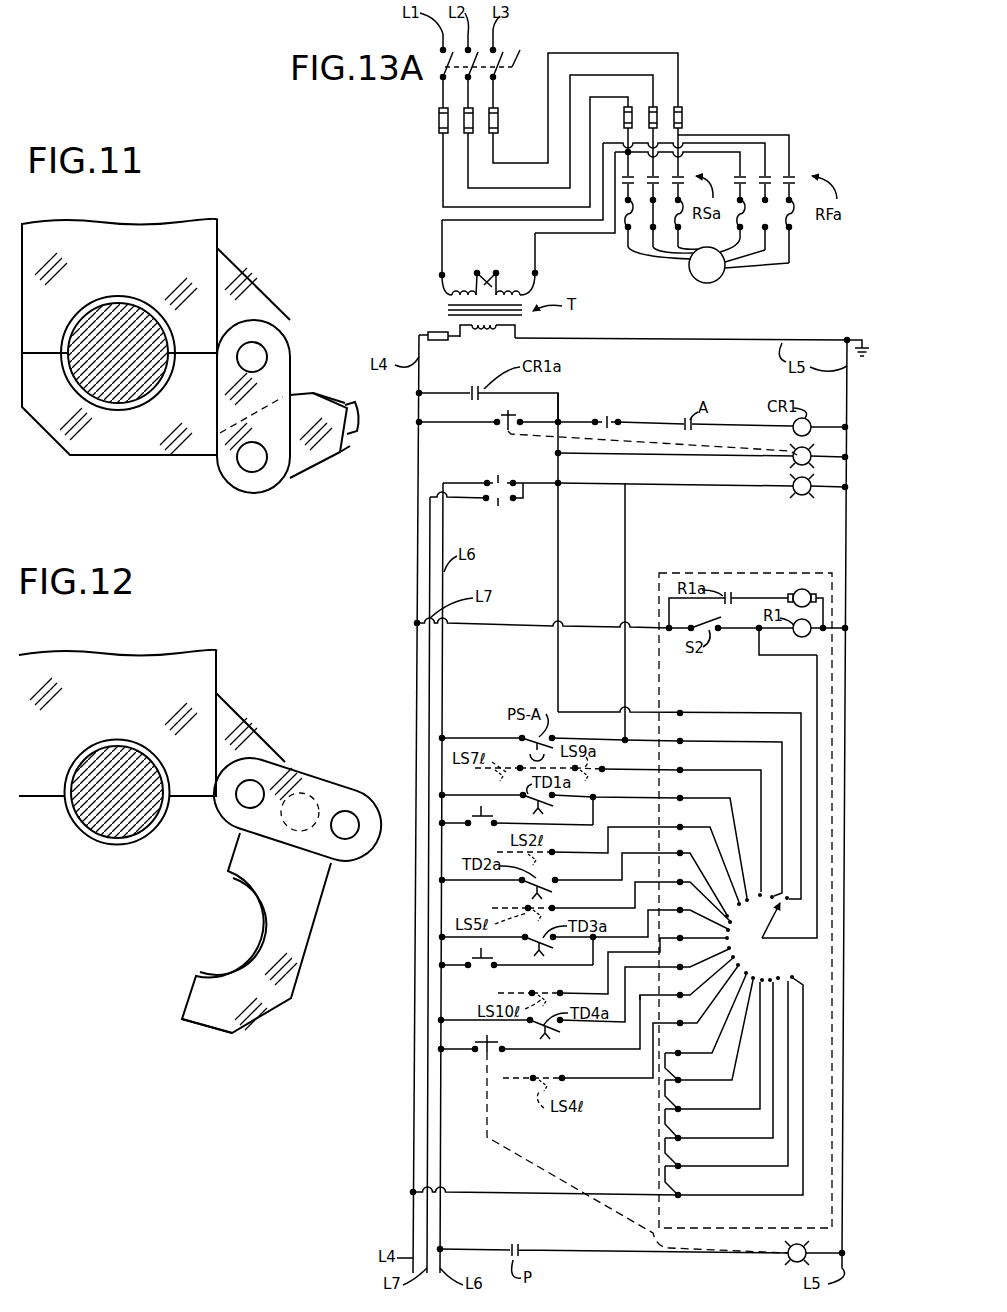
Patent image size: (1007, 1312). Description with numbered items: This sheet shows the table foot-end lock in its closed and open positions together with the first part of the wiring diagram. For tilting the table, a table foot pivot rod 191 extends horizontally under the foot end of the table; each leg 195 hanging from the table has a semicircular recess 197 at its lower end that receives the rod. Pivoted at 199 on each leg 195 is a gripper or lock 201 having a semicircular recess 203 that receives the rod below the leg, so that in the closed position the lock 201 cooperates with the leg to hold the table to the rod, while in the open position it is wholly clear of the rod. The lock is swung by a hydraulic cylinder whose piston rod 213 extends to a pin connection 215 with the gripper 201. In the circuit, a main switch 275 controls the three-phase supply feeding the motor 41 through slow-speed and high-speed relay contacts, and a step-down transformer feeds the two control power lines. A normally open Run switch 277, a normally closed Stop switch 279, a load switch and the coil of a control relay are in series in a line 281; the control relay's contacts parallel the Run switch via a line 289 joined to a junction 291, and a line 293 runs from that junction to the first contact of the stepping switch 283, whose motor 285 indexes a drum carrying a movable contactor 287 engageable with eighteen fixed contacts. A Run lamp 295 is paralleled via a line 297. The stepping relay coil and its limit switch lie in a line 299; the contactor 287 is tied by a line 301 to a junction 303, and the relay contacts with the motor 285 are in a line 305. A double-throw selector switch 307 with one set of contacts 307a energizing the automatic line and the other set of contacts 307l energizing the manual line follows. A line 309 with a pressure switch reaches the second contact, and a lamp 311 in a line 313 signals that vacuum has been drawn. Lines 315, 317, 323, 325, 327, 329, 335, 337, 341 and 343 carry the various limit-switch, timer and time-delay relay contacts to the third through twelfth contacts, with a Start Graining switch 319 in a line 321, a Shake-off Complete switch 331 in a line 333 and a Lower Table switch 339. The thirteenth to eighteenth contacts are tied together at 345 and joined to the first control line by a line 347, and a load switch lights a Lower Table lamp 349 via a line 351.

In FIG. 11, the table foot pivot rod 191 is at (105, 388).
In FIG. 12, the table foot pivot rod 191 is at (74, 833).
In FIG. 11, the leg 195 is at (218, 222).
In FIG. 12, the leg 195 is at (218, 671).
In FIG. 11, the semicircular recess 197 is at (116, 296).
In FIG. 12, the semicircular recess 197 is at (141, 740).
In FIG. 11, the pivot 199 is at (268, 357).
In FIG. 12, the pivot 199 is at (259, 798).
In FIG. 11, the gripper or lock 201 is at (63, 452).
In FIG. 12, the gripper or lock 201 is at (218, 1036).
In FIG. 11, the semicircular recess 203 is at (155, 397).
In FIG. 12, the semicircular recess 203 is at (258, 922).
In FIG. 11, the piston rod 213 is at (352, 436).
In FIG. 11, the pin connection 215 is at (248, 472).
In FIG. 12, the pin connection 215 is at (344, 864).
In FIG. 13A, the motor 41 is at (703, 283).
In FIG. 13A, the main switch 275 is at (520, 50).
In FIG. 13A, the Run switch 277 is at (501, 415).
In FIG. 13A, the Stop switch 279 is at (619, 418).
In FIG. 13A, the line 281 is at (486, 424).
In FIG. 13A, the stepping switch 283 is at (682, 571).
In FIG. 13A, the motor 285 is at (803, 588).
In FIG. 13A, the movable contactor 287 is at (777, 918).
In FIG. 13A, the line 289 is at (453, 392).
In FIG. 13A, the junction 291 is at (560, 418).
In FIG. 13A, the line 293 is at (559, 575).
In FIG. 13A, the Run lamp 295 is at (793, 452).
In FIG. 13A, the line 297 is at (633, 454).
In FIG. 13A, the line 299 is at (488, 627).
In FIG. 13A, the line 301 is at (817, 681).
In FIG. 13A, the junction 303 is at (759, 633).
In FIG. 13A, the line 305 is at (787, 596).
In FIG. 13A, the double-throw selector switch 307 is at (508, 478).
In FIG. 13A, the contacts 307a is at (491, 478).
In FIG. 13A, the contacts 307l is at (517, 500).
In FIG. 13A, the line 309 is at (477, 737).
In FIG. 13A, the lamp 311 is at (804, 497).
In FIG. 13A, the line 313 is at (627, 528).
In FIG. 13A, the line 315 is at (746, 770).
In FIG. 13A, the line 317 is at (730, 797).
In FIG. 13A, the Start Graining switch 319 is at (481, 827).
In FIG. 13A, the line 321 is at (596, 809).
In FIG. 13A, the line 323 is at (720, 826).
In FIG. 13A, the line 325 is at (705, 853).
In FIG. 13A, the line 327 is at (697, 881).
In FIG. 13A, the line 329 is at (698, 909).
In FIG. 13A, the Shake-off Complete switch 331 is at (482, 967).
In FIG. 13A, the line 333 is at (533, 966).
In FIG. 13A, the line 335 is at (698, 937).
In FIG. 13A, the line 337 is at (698, 966).
In FIG. 13A, the Lower Table switch 339 is at (476, 1034).
In FIG. 13A, the line 341 is at (698, 994).
In FIG. 13A, the line 343 is at (699, 1015).
In FIG. 13A, the interconnection 345 is at (664, 1124).
In FIG. 13A, the line 347 is at (547, 1194).
In FIG. 13A, the Lower Table lamp 349 is at (792, 1266).
In FIG. 13A, the line 351 is at (587, 1255).